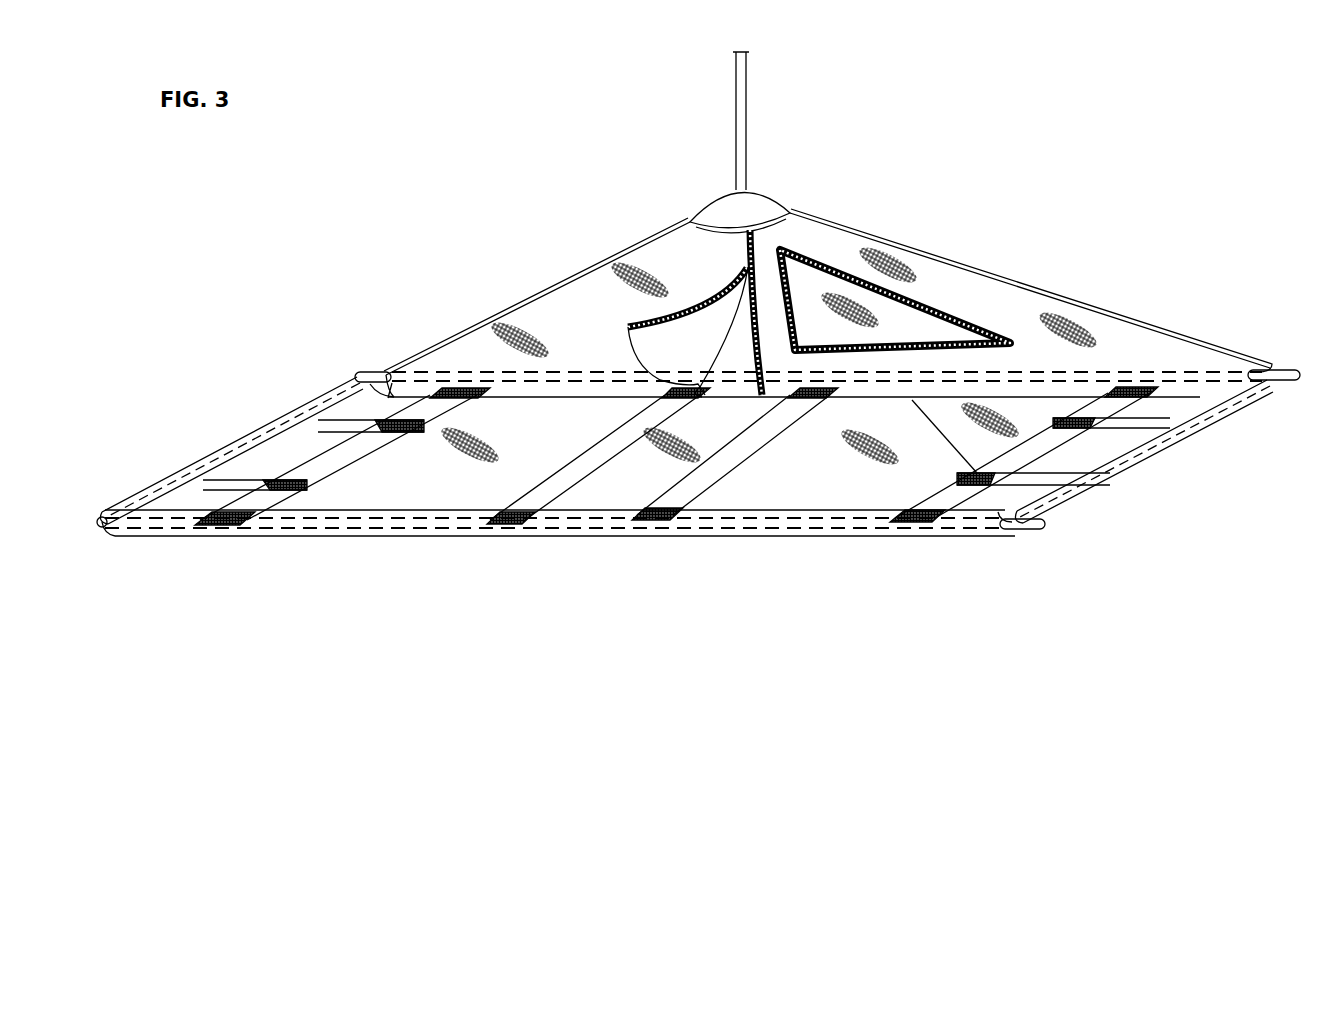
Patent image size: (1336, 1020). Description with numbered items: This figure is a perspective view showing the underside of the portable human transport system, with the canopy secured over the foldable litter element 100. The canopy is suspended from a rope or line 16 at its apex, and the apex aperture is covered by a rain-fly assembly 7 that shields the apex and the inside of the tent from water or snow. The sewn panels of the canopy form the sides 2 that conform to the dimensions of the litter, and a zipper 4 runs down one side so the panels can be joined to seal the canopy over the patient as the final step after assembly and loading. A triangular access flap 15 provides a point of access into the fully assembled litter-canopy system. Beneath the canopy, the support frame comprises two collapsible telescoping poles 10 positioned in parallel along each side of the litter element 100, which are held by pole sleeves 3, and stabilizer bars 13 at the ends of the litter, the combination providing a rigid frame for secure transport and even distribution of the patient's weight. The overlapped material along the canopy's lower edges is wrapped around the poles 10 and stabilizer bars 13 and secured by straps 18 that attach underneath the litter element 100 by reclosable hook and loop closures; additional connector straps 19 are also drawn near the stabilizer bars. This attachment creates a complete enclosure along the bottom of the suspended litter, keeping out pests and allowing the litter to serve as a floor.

The canopy sides 2 is at (594, 326).
The pole sleeves 3 is at (497, 395).
The zipper 4 is at (700, 300).
The rain-fly assembly 7 is at (752, 205).
The telescoping poles 10 is at (365, 372).
The stabilizer bars 13 is at (262, 442).
The access flap 15 is at (831, 331).
The rope or line 16 is at (746, 118).
The straps 18 is at (330, 465).
The connector strap 19 is at (230, 490).
The litter element 100 is at (728, 432).